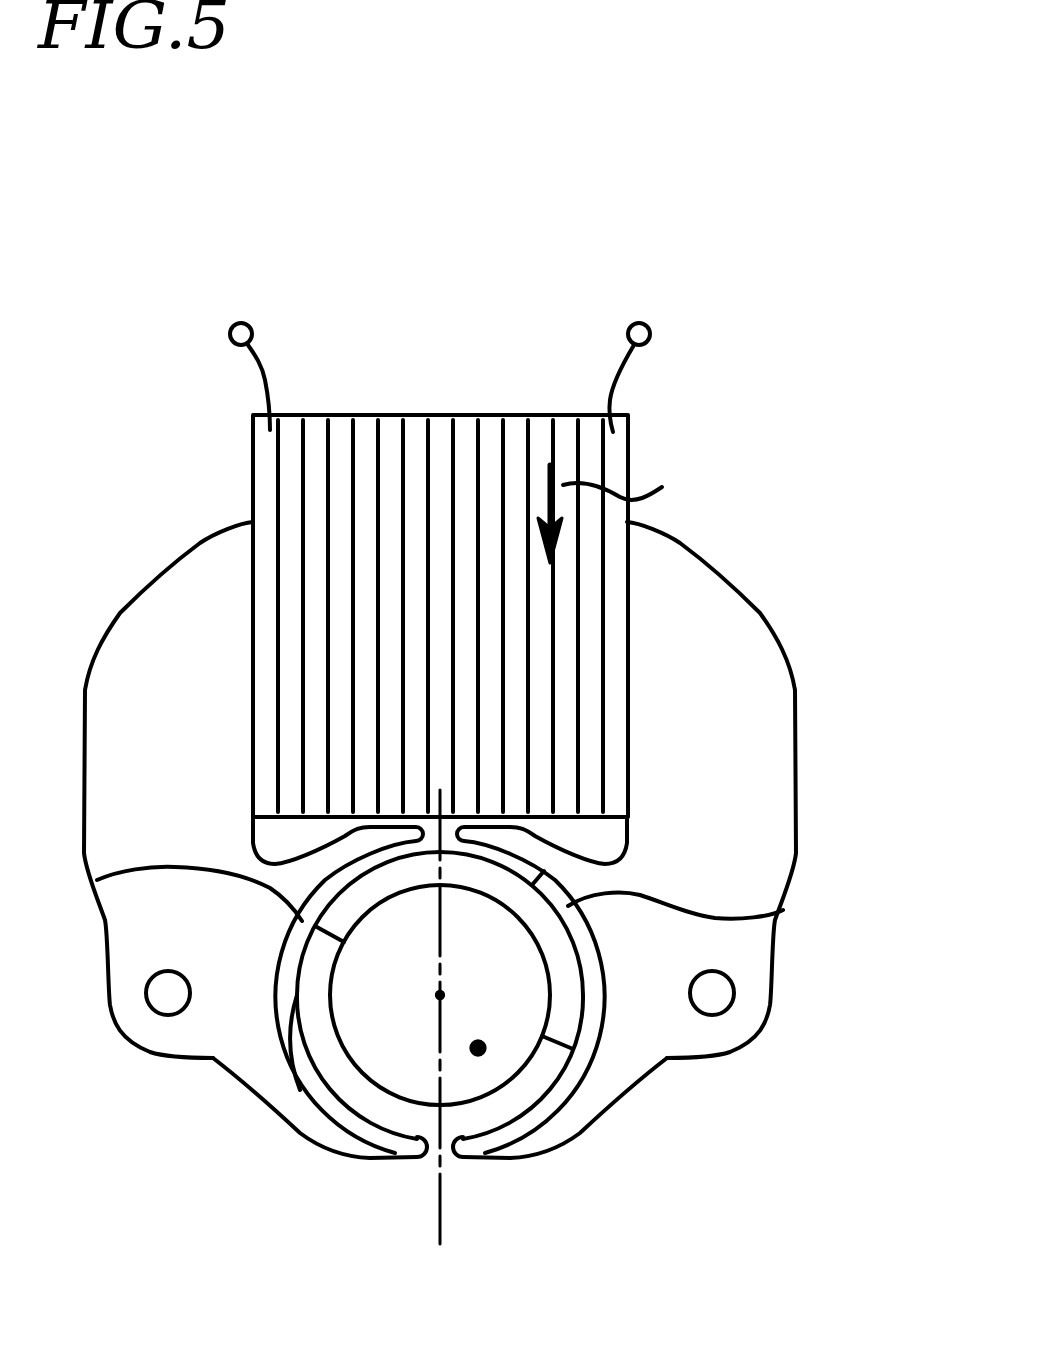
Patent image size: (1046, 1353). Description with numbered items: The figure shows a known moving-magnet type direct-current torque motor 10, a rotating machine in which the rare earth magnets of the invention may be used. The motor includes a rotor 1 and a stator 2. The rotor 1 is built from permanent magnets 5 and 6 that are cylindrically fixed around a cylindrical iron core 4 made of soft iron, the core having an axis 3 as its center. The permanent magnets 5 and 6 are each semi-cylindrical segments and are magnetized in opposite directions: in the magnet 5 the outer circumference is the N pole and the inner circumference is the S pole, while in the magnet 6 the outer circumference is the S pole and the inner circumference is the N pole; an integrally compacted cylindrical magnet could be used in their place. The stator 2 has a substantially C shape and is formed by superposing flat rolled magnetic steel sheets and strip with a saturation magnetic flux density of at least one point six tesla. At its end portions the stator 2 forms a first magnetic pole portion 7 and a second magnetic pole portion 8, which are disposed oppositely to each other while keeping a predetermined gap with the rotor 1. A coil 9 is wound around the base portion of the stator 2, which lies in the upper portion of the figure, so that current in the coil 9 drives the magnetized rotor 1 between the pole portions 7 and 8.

The direct-current torque motor 10 is at (742, 393).
The coil 9 is at (450, 413).
The stator 2 is at (770, 690).
The cylindrical iron core 4 is at (347, 990).
The axis 3 is at (440, 994).
The rotor 1 is at (485, 1053).
The permanent magnet 5 is at (370, 1102).
The permanent magnet 6 is at (783, 910).
The first magnetic pole portion 7 is at (402, 1153).
The second magnetic pole portion 8 is at (547, 1130).